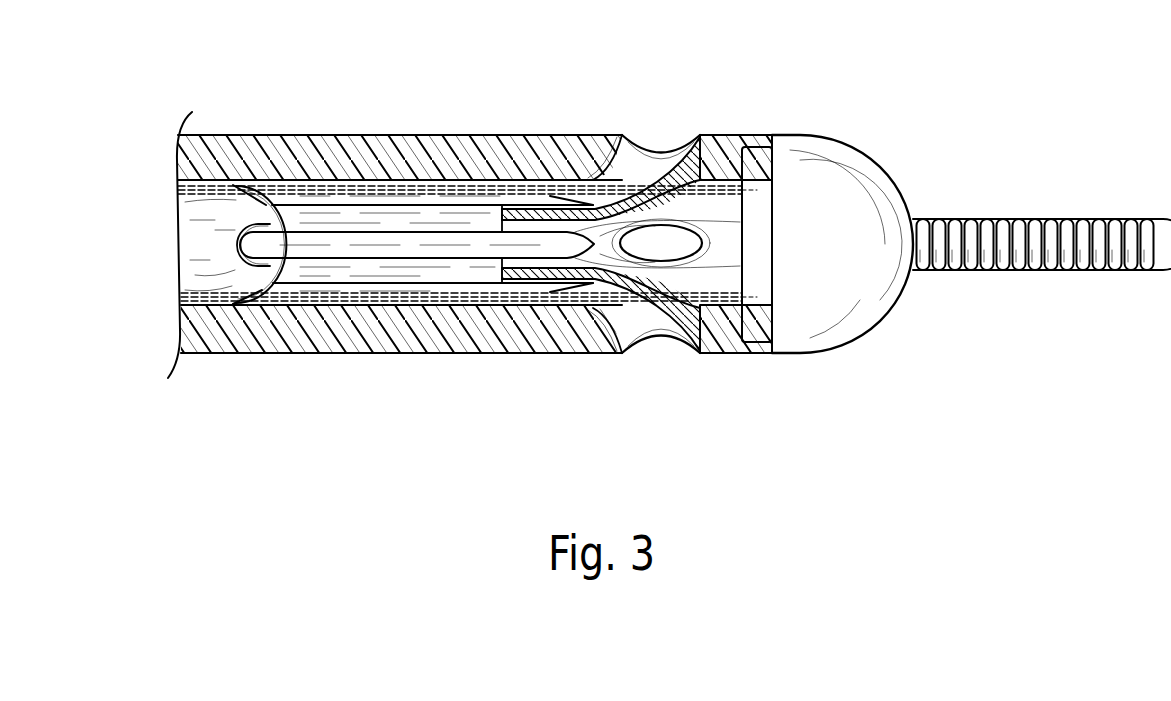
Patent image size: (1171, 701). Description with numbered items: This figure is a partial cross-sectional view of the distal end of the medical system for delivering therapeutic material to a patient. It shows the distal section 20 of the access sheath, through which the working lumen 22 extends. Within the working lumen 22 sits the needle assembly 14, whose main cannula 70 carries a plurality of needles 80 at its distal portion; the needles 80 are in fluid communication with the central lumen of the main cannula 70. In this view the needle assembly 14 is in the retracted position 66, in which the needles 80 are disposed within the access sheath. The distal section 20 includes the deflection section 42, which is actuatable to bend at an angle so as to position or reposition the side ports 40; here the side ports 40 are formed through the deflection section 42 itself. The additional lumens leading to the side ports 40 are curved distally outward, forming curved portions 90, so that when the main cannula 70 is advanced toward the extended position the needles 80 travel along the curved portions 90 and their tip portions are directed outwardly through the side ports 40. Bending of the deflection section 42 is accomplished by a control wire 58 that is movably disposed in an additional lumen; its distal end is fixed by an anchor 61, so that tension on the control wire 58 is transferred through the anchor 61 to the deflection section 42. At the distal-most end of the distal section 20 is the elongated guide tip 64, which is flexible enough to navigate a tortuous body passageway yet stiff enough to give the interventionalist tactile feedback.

The needle assembly 14 is at (240, 217).
The distal section 20 is at (317, 353).
The working lumen 22 is at (447, 277).
The side ports 40 is at (672, 175).
The deflection section 42 is at (572, 337).
The control wire 58 is at (728, 133).
The anchor 61 is at (762, 135).
The elongated guide tip 64 is at (1050, 268).
The retracted position 66 is at (257, 217).
The main cannula 70 is at (208, 217).
The needles 80 is at (390, 247).
The curved portions 90 is at (653, 155).